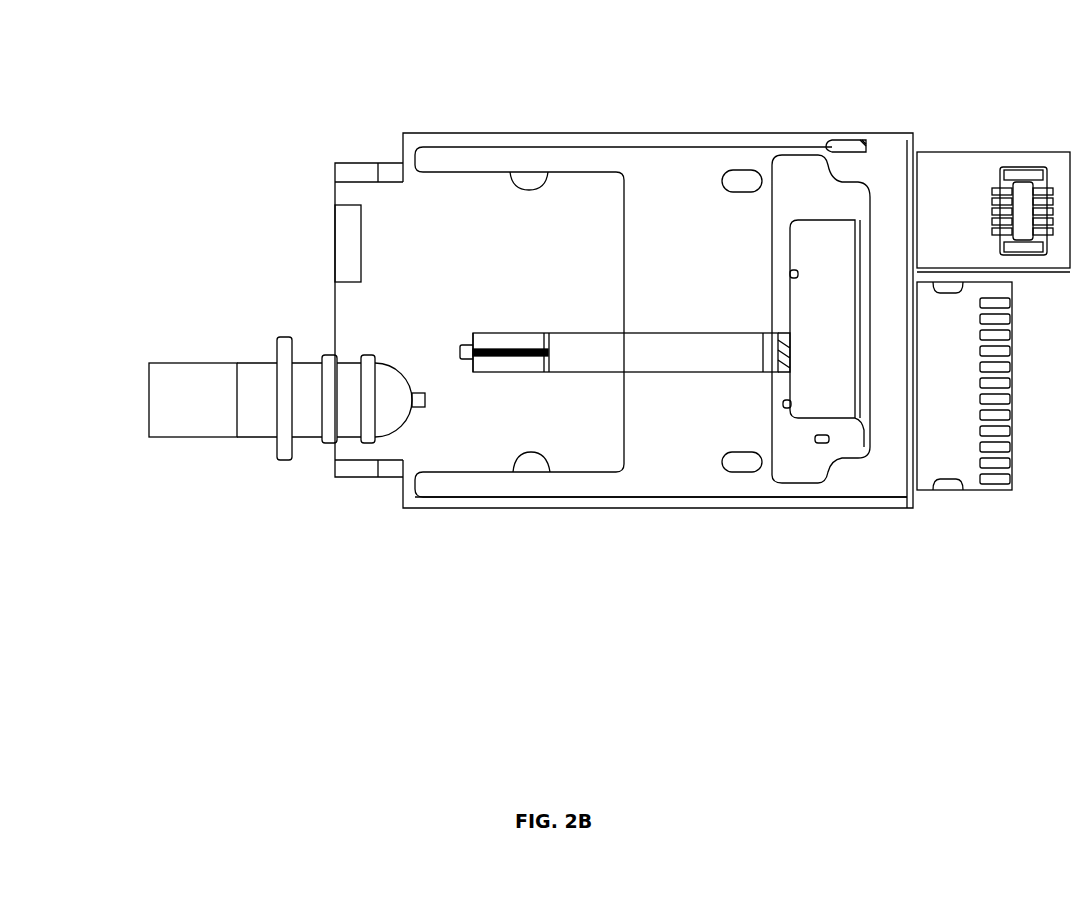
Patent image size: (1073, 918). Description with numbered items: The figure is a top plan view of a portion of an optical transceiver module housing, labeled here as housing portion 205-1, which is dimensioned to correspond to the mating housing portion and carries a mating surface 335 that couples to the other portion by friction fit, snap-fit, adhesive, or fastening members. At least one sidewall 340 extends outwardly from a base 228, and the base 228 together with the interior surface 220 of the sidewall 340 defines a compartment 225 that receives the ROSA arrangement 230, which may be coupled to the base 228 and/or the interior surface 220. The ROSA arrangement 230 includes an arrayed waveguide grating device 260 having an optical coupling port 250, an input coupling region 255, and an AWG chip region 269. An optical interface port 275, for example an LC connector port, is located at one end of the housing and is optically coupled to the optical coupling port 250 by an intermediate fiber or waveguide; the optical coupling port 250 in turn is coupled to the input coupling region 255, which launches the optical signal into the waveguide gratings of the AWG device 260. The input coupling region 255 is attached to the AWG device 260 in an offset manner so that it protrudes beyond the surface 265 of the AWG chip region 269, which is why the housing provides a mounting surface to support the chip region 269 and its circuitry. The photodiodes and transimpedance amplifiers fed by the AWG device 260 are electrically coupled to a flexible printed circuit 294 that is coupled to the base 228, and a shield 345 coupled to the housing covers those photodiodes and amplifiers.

The TOSA housing portion 205-1 is at (232, 80).
The interior surface 220 is at (703, 494).
The second compartment 225 is at (600, 155).
The base 228 is at (371, 378).
The ROSA arrangement 230 is at (538, 322).
The optical coupling port 250 is at (458, 355).
The input coupling region 255 is at (482, 325).
The arrayed waveguide grating (AWG) device 260 is at (582, 347).
The surface of the AWG chip region 265 is at (560, 372).
The AWG chip region 269 is at (680, 345).
The optical interface port 275 is at (183, 363).
The flexible printed circuit (FPC) 294 is at (923, 153).
The mating surface 335 is at (340, 238).
The sidewall 340 is at (717, 500).
The shield 345 is at (840, 162).